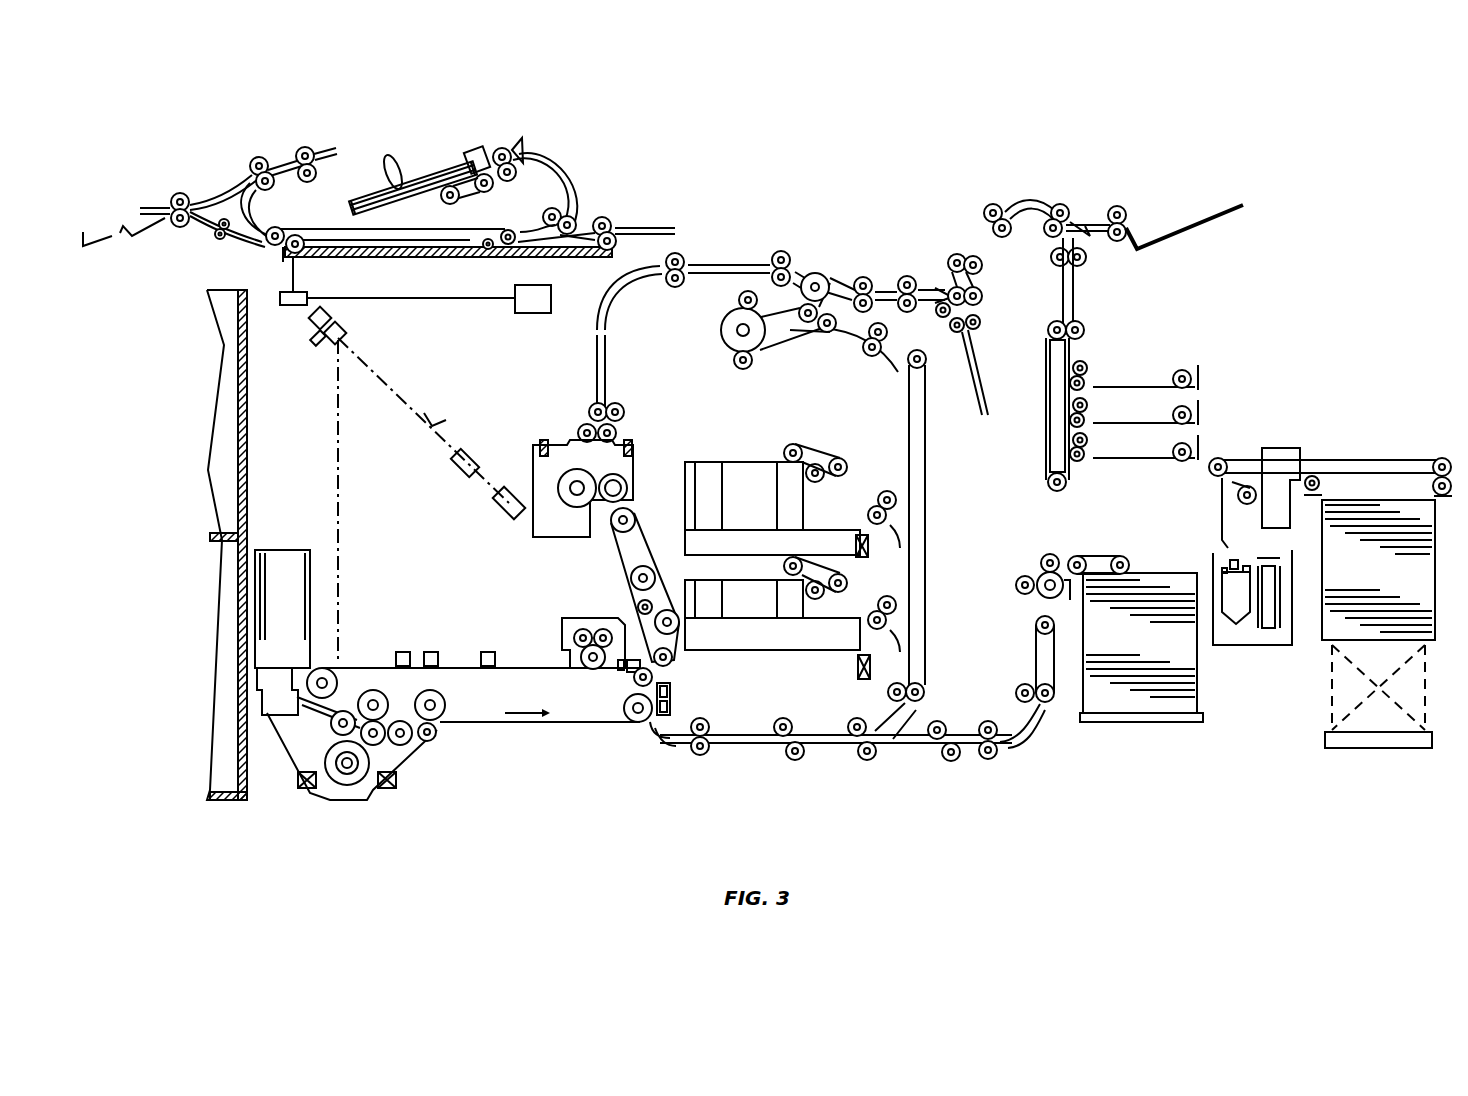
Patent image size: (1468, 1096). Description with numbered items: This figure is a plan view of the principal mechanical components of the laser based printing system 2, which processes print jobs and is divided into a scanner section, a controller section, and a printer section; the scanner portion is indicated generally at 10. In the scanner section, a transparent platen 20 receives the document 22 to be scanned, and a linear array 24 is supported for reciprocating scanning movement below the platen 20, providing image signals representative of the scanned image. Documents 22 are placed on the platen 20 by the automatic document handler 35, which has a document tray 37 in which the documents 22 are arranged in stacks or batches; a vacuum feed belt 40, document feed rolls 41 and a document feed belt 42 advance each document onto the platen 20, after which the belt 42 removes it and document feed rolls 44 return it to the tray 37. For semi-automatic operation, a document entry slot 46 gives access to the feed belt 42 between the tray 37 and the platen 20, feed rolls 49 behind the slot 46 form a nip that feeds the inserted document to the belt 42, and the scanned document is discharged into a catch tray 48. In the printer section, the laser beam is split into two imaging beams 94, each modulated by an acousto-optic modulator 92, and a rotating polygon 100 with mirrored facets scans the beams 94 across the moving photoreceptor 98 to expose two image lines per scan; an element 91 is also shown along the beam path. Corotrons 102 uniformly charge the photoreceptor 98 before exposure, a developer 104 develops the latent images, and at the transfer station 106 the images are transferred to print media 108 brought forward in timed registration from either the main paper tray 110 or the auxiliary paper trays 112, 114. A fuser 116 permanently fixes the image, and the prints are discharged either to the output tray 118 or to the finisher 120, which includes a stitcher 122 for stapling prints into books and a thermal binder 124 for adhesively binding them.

The printing system 2 is at (800, 179).
The web feed section 10 is at (206, 173).
The transparent platen 20 is at (448, 259).
The document 22 is at (392, 163).
The linear array 24 is at (285, 289).
The automatic document handler 35 is at (415, 158).
The document tray 37 is at (398, 196).
The vacuum feed belt 40 is at (494, 189).
The document feed rolls 41 is at (520, 142).
The document feed belt 42 is at (455, 228).
The document feed rolls 44 is at (286, 185).
The document entry slot 46 is at (634, 222).
The catch tray 48 is at (143, 222).
The feed rolls 49 is at (603, 218).
The reflector 91 is at (504, 520).
The acousto-optic modulator 92 is at (474, 453).
The imaging beams 94 is at (444, 412).
The photoreceptor 98 is at (512, 665).
The rotating polygon 100 is at (318, 336).
The corotrons 102 is at (488, 655).
The developer 104 is at (415, 762).
The transfer station 106 is at (645, 742).
The print media 108 is at (1197, 687).
The main paper tray 110 is at (1122, 723).
The auxiliary paper tray 112 is at (745, 650).
The auxiliary paper tray 114 is at (742, 464).
The fuser 116 is at (651, 466).
The output tray 118 is at (1212, 222).
The finisher 120 is at (1252, 389).
The stitcher 122 is at (1200, 400).
The thermal binder 124 is at (1356, 450).